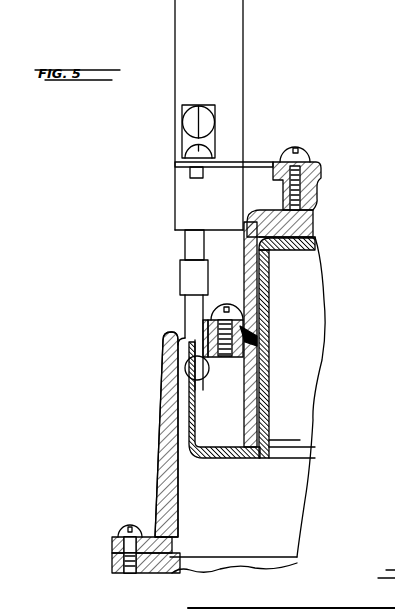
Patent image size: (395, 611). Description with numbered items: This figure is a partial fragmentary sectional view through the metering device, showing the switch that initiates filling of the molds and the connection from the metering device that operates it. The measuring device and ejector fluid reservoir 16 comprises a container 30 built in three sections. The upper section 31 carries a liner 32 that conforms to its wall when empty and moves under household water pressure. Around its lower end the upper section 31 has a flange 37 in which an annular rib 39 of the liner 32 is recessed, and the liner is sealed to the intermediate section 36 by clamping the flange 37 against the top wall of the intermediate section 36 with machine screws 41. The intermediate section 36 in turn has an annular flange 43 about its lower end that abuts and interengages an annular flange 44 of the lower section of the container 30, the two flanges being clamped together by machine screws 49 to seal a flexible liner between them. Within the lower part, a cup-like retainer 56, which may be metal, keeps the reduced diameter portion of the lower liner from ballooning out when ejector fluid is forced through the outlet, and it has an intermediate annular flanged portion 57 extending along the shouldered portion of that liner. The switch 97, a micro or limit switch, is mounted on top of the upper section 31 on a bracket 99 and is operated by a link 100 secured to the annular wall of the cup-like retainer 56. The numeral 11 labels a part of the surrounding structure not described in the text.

The switch 97 is at (244, 88).
The bracket 99 is at (255, 162).
The liner 32 is at (308, 232).
The upper section 31 is at (246, 258).
The link 100 is at (184, 272).
The machine screws 41 is at (203, 303).
The flange 37 is at (207, 322).
The annular rib 39 is at (243, 328).
The measuring device and ejector fluid reservoir 16 is at (162, 358).
The intermediate section 36 is at (165, 426).
The container 30 is at (328, 370).
The cup-like retainer 56 is at (268, 410).
The intermediate annular flanged portion 57 is at (190, 424).
The machine screws 49 is at (130, 530).
The annular flange 43 is at (112, 545).
The annular flange 44 is at (116, 570).
The base plate 11 is at (375, 608).